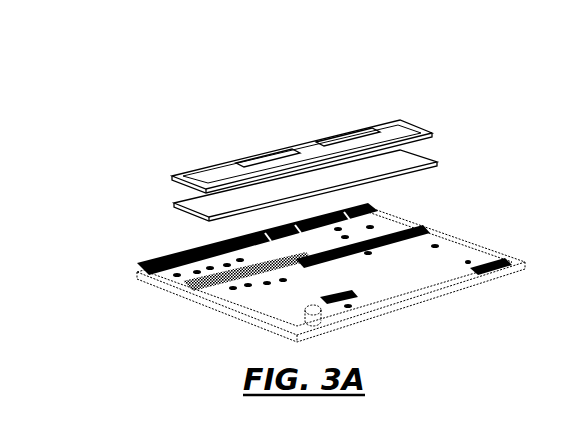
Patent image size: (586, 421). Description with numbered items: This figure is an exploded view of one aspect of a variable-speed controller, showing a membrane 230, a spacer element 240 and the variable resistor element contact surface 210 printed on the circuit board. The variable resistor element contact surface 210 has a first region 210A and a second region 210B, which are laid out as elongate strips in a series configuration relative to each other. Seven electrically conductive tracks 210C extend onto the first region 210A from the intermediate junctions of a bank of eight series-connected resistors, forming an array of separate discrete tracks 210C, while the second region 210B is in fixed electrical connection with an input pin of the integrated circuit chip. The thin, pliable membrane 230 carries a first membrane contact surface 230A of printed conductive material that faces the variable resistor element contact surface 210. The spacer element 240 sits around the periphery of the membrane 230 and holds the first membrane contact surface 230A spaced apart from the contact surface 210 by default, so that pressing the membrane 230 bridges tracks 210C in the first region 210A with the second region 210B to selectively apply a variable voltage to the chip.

The variable resistor element contact surface 210 is at (175, 160).
The first region 210A is at (387, 247).
The second region 210B is at (320, 270).
The electrically conductive tracks 210C is at (233, 290).
The membrane 230 is at (423, 133).
The first membrane contact surface 230A is at (352, 138).
The spacer element 240 is at (392, 173).